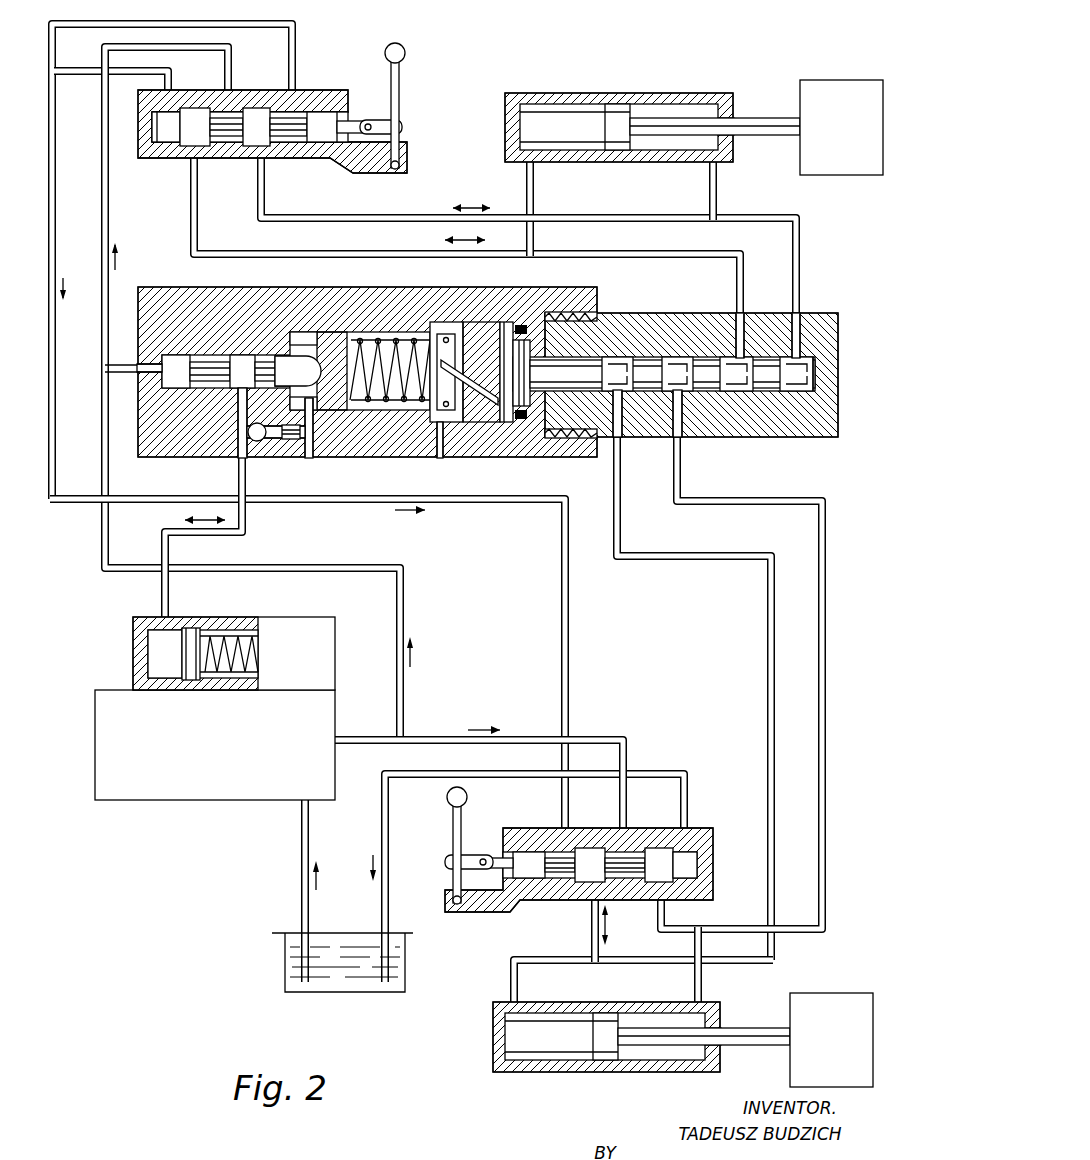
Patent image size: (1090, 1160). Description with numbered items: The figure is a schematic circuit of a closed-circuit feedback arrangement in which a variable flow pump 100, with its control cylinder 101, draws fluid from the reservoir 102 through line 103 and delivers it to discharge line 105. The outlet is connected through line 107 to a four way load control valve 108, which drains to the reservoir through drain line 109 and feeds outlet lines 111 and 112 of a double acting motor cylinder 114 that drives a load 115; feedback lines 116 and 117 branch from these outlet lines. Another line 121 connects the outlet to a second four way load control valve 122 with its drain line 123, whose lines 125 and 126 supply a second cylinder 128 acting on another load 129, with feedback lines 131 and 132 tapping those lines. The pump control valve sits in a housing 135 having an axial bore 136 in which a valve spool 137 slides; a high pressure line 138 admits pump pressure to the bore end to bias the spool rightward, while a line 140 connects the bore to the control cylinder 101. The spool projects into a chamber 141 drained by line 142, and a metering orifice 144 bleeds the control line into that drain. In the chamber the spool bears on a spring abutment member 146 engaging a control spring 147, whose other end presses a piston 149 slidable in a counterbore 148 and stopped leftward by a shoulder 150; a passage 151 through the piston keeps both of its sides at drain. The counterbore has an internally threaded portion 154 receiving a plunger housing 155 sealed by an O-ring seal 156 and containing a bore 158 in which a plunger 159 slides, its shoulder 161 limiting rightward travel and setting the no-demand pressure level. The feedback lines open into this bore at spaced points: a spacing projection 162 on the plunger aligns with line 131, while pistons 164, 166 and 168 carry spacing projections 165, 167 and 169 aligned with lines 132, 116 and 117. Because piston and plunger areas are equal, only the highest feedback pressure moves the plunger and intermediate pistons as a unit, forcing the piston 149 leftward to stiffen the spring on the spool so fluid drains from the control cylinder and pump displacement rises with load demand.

The pump 100 is at (188, 800).
The control cylinder 101 is at (150, 655).
The reservoir 102 is at (334, 992).
The line 103 is at (300, 860).
The discharge line 105 is at (356, 736).
The line 107 is at (404, 620).
The load control valve 108 is at (168, 162).
The drain line 109 is at (160, 498).
The outlet line 111 is at (192, 224).
The outlet line 112 is at (266, 190).
The motor cylinder 114 is at (588, 93).
The load 115 is at (832, 80).
The feedback line 116 is at (662, 258).
The feedback line 117 is at (802, 240).
The line 121 is at (605, 738).
The load control valve 122 is at (556, 900).
The drain line 123 is at (510, 776).
The line 125 is at (512, 962).
The line 126 is at (702, 980).
The cylinder 128 is at (526, 1072).
The load 129 is at (836, 994).
The feedback line 131 is at (768, 650).
The feedback line 132 is at (826, 632).
The housing 135 is at (228, 288).
The axial bore 136 is at (172, 390).
The valve spool 137 is at (240, 355).
The high pressure line 138 is at (112, 370).
The line 140 is at (250, 520).
The chamber 141 is at (384, 410).
The line 142 is at (316, 468).
The metering orifice 144 is at (258, 457).
The spring abutment member 146 is at (320, 332).
The control spring 147 is at (382, 338).
The counterbore 148 is at (445, 322).
The piston 149 is at (506, 322).
The shoulder 150 is at (440, 457).
The passage 151 is at (474, 408).
The internally threaded portion 154 is at (608, 314).
The plunger housing 155 is at (790, 438).
The O-ring seal 156 is at (528, 440).
The bore 158 is at (718, 437).
The plunger 159 is at (664, 373).
The shoulder 161 is at (528, 330).
The spacing projection 162 is at (618, 360).
The piston 164 is at (626, 392).
The spacing projection 165 is at (678, 360).
The piston 166 is at (684, 392).
The spacing projection 167 is at (738, 360).
The piston 168 is at (778, 391).
The spacing projection 169 is at (818, 370).